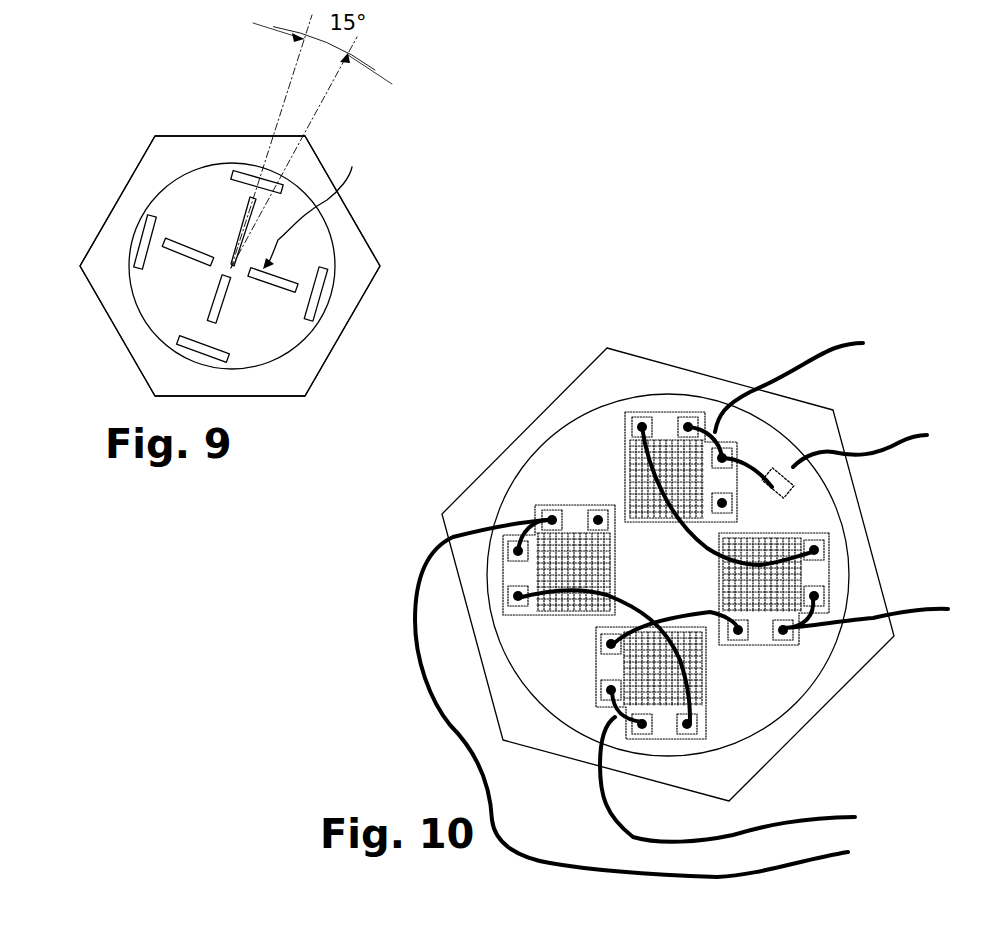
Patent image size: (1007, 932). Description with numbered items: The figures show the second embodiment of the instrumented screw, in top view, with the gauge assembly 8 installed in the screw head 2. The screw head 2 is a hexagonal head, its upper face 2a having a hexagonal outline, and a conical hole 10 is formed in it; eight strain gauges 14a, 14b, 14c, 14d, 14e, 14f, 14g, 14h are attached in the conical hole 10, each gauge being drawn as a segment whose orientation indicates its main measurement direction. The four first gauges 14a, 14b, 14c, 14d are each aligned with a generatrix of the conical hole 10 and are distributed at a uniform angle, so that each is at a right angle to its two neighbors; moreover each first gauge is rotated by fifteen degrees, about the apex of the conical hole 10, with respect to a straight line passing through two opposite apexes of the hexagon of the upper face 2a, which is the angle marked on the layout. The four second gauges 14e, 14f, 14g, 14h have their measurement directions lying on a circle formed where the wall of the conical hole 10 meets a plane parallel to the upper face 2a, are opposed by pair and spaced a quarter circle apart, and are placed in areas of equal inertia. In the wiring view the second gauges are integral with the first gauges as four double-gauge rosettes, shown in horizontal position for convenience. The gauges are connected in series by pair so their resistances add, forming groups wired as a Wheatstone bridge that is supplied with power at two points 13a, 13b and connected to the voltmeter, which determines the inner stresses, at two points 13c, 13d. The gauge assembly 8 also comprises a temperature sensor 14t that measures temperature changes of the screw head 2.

In FIG. 9, the screw head 2 is at (368, 306).
In FIG. 9, the upper face 2a is at (357, 257).
In FIG. 10, the upper face 2a is at (600, 380).
In FIG. 9, the gauge assembly 8 is at (310, 204).
In FIG. 9, the conical hole 10 is at (317, 243).
In FIG. 10, the power supply point 13a is at (715, 430).
In FIG. 10, the power supply point 13b is at (613, 717).
In FIG. 10, the voltmeter connection point 13c is at (800, 633).
In FIG. 10, the voltmeter connection point 13d is at (522, 533).
In FIG. 9, the first strain gauge 14a is at (187, 248).
In FIG. 10, the first strain gauge 14a is at (667, 425).
In FIG. 9, the first strain gauge 14b is at (243, 213).
In FIG. 10, the first strain gauge 14b is at (815, 575).
In FIG. 9, the first strain gauge 14c is at (272, 289).
In FIG. 10, the first strain gauge 14c is at (665, 718).
In FIG. 9, the first strain gauge 14d is at (222, 311).
In FIG. 10, the first strain gauge 14d is at (508, 578).
In FIG. 9, the second strain gauge 14e is at (316, 312).
In FIG. 10, the second strain gauge 14e is at (605, 668).
In FIG. 9, the second strain gauge 14f is at (243, 173).
In FIG. 10, the second strain gauge 14f is at (758, 633).
In FIG. 9, the second strain gauge 14g is at (143, 237).
In FIG. 10, the second strain gauge 14g is at (723, 482).
In FIG. 9, the second strain gauge 14h is at (193, 342).
In FIG. 10, the second strain gauge 14h is at (572, 510).
In FIG. 10, the temperature sensor 14t is at (785, 487).